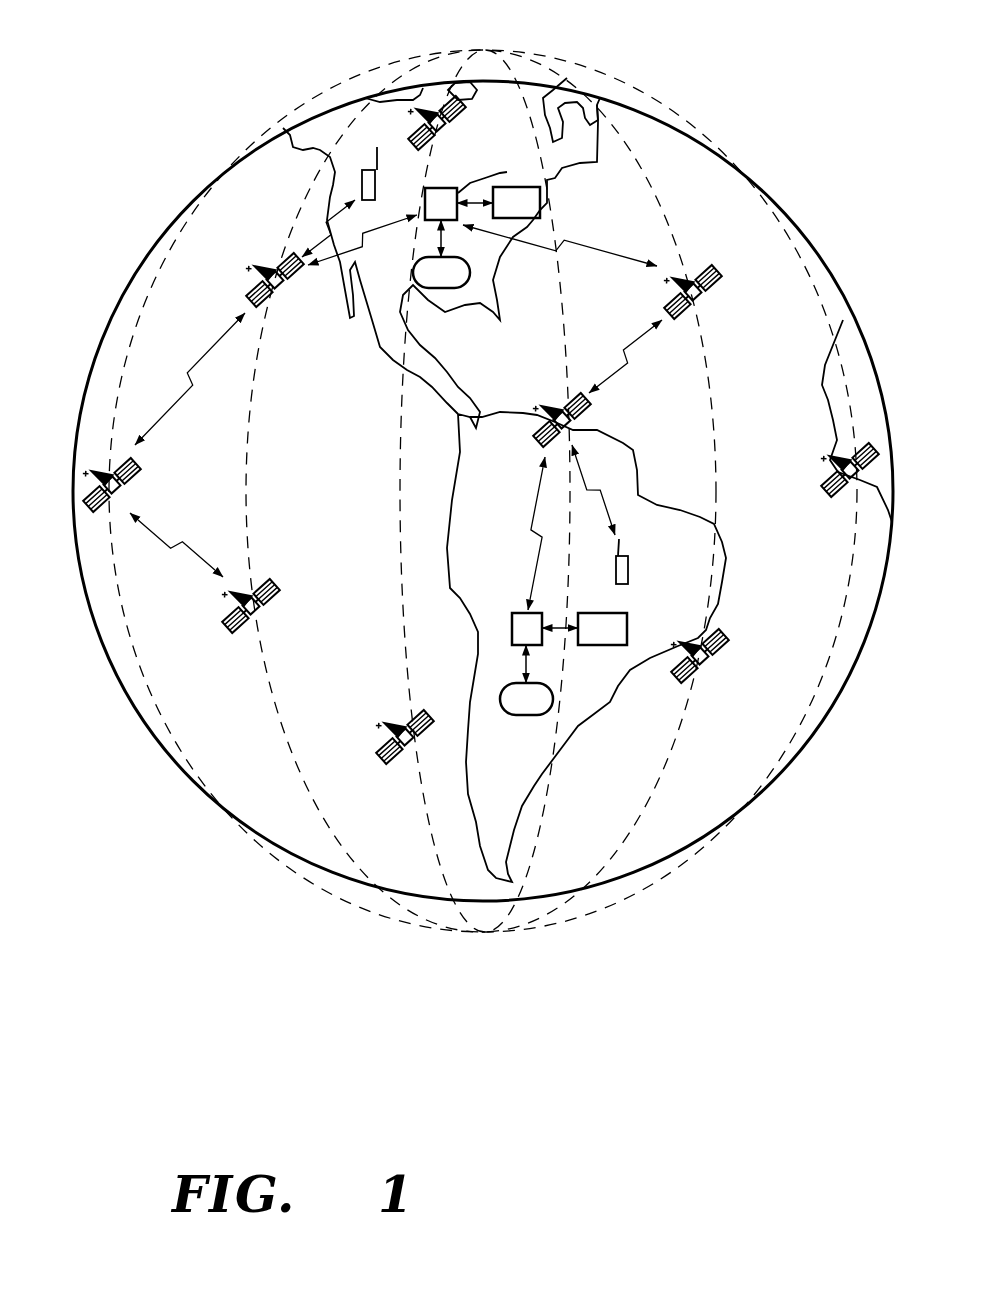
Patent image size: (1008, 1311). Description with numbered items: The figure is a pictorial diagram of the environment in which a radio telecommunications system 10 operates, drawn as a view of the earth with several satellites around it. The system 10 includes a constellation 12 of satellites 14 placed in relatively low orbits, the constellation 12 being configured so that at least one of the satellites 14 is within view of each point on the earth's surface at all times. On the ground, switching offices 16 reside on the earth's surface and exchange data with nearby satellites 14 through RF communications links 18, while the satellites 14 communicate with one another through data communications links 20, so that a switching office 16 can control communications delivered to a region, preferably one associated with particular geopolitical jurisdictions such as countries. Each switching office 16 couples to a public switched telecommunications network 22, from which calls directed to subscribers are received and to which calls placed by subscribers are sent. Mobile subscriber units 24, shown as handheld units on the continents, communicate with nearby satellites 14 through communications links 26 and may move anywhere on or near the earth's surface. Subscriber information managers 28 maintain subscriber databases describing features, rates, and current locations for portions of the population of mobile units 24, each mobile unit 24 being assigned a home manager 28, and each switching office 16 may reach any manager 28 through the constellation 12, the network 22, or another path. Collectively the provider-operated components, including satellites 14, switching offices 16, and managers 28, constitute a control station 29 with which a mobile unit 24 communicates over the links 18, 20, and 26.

The radio telecommunications system 10 is at (482, 1052).
The constellation 12 is at (488, 49).
The satellite 14 is at (283, 295).
The switching office 16 is at (435, 188).
The RF communications link 18 is at (376, 230).
The data communications link 20 is at (212, 368).
The public switched telecommunications network 22 is at (440, 288).
The mobile subscriber unit 24 is at (365, 170).
The communications link 26 is at (312, 250).
The subscriber information manager 28 is at (543, 214).
The control station 29 is at (252, 265).